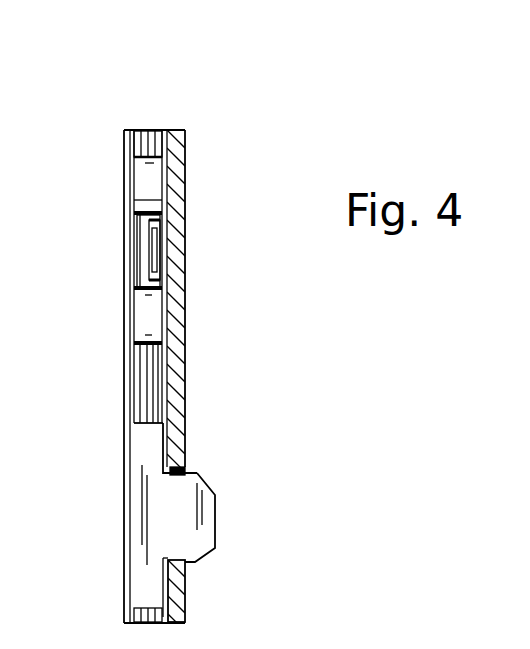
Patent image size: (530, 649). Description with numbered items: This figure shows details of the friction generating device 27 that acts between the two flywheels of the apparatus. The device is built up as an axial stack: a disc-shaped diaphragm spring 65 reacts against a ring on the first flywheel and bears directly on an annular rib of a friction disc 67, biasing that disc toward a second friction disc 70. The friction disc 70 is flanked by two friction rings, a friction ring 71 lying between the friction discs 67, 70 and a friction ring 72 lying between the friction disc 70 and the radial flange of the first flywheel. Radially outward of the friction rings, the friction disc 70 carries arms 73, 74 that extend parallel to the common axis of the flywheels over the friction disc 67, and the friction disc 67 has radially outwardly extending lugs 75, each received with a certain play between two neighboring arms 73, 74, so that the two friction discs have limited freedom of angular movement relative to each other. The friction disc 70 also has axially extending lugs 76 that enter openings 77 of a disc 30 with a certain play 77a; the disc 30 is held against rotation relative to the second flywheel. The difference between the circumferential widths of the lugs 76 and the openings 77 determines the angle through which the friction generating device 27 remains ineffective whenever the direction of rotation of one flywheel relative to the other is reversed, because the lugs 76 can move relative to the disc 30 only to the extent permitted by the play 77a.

The diaphragm spring 65 is at (167, 131).
The friction disc 67 is at (153, 131).
The friction disc 70 is at (136, 131).
The friction ring 71 is at (145, 386).
The friction ring 72 is at (131, 236).
The arm 73 is at (153, 313).
The arm 74 is at (155, 180).
The lug 75 is at (152, 262).
The lug 76 is at (183, 537).
The opening 77 is at (185, 472).
The play 77a is at (200, 476).
The disc 30 is at (178, 600).
The friction generating device 27 is at (157, 632).